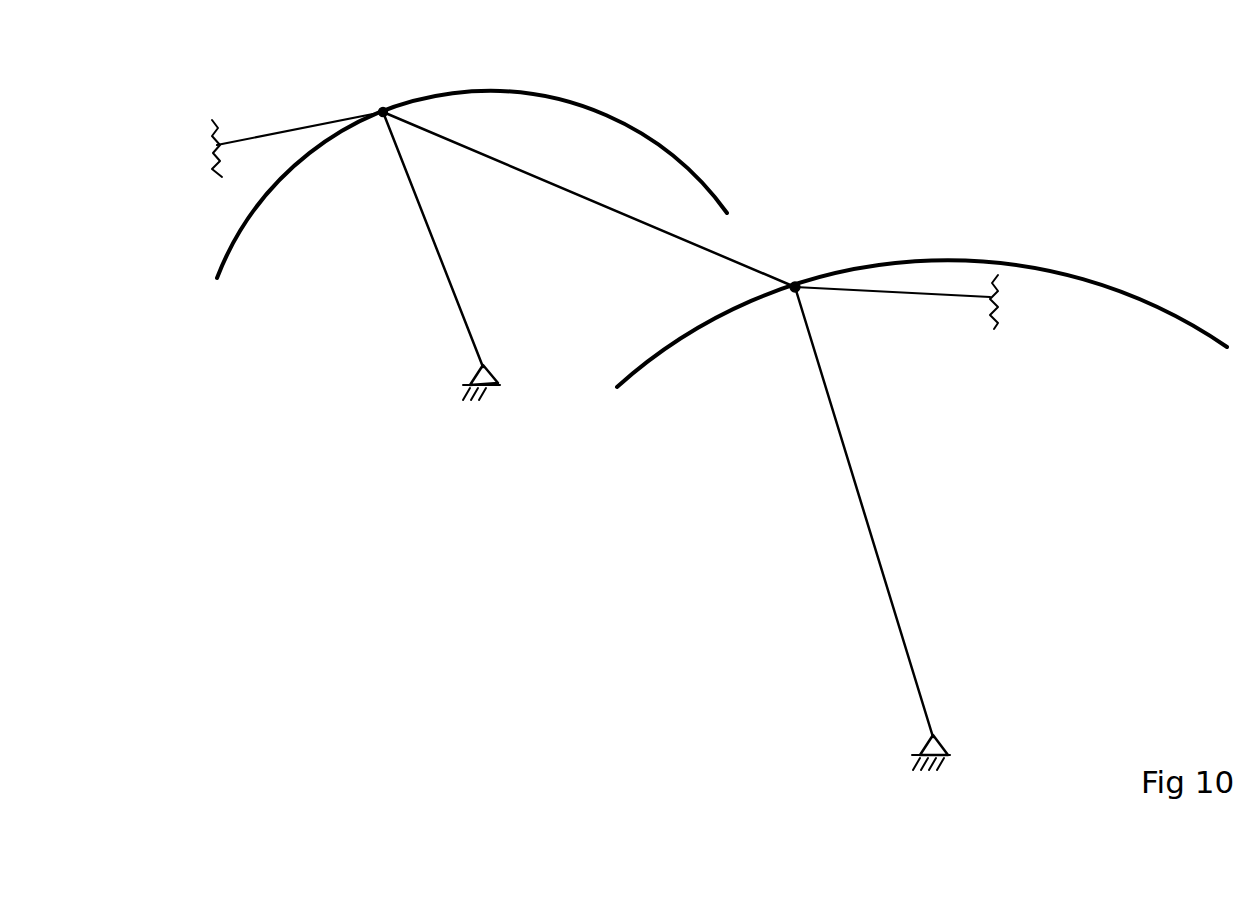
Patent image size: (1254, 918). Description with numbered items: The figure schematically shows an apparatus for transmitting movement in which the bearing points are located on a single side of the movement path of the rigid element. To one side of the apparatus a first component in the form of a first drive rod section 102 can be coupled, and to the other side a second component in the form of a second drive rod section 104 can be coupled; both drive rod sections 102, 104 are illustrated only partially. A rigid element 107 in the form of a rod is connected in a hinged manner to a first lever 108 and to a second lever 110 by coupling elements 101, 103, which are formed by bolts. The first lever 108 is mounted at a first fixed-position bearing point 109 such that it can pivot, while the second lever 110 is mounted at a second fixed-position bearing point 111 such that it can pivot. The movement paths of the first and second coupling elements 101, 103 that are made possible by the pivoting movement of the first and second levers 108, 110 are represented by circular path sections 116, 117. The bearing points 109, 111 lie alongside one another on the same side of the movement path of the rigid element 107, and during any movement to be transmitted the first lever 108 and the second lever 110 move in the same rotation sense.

The first coupling element 101 is at (351, 208).
The first drive rod section 102 is at (296, 90).
The second coupling element 103 is at (822, 218).
The second drive rod section 104 is at (916, 352).
The rigid element 107 is at (712, 124).
The first lever 108 is at (482, 262).
The first fixed-position bearing point 109 is at (520, 362).
The second lever 110 is at (906, 512).
The second fixed-position bearing point 111 is at (968, 738).
The circular path section 116 is at (622, 73).
The circular path section 117 is at (1130, 257).